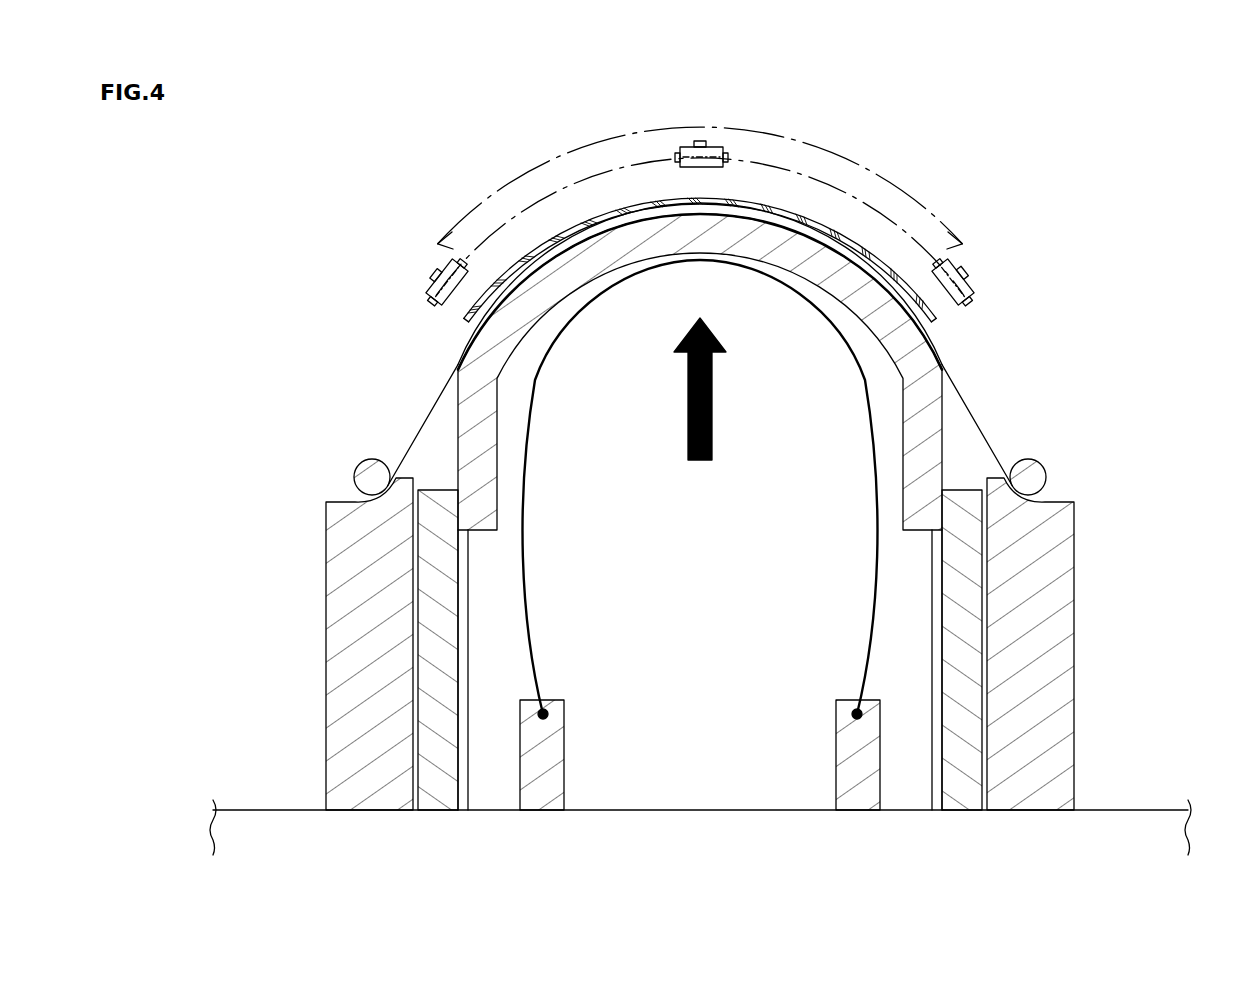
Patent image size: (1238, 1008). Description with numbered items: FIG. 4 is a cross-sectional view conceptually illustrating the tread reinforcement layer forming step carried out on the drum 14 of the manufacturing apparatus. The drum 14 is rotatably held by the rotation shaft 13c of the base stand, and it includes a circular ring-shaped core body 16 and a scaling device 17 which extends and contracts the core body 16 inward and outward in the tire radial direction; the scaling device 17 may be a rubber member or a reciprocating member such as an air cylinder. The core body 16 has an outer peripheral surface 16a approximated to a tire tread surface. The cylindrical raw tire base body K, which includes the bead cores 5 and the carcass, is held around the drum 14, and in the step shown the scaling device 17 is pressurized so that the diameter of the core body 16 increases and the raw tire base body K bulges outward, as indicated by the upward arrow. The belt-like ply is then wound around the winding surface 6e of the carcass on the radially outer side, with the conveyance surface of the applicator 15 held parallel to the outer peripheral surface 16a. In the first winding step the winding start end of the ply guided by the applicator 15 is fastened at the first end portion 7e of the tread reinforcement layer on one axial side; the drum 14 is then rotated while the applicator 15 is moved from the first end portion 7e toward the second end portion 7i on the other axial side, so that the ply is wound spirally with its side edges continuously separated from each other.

The bead core 5 is at (358, 466).
The winding surface 6e is at (553, 240).
The first end portion 7e is at (463, 320).
The second end portion 7i is at (937, 327).
The rotation shaft 13c is at (1120, 810).
The drum 14 is at (806, 218).
The applicator 15 is at (975, 280).
The core body 16 is at (927, 400).
The outer peripheral surface 16a is at (937, 353).
The scaling device 17 is at (532, 652).
The raw tire base body K is at (362, 307).